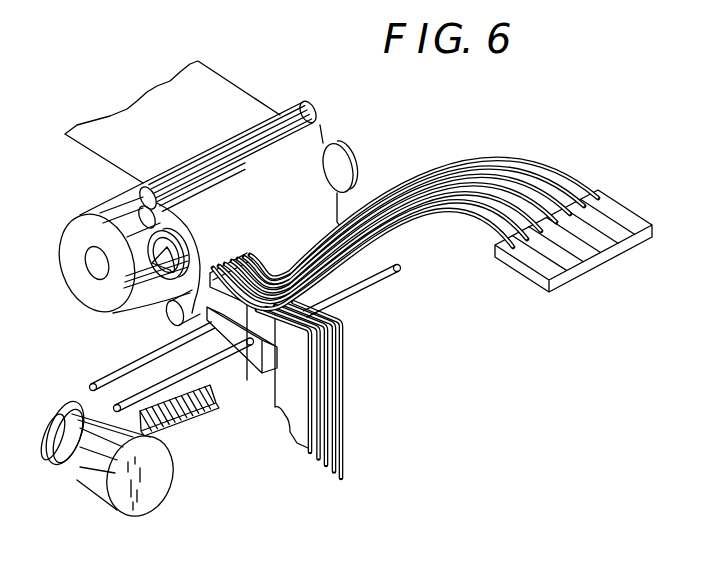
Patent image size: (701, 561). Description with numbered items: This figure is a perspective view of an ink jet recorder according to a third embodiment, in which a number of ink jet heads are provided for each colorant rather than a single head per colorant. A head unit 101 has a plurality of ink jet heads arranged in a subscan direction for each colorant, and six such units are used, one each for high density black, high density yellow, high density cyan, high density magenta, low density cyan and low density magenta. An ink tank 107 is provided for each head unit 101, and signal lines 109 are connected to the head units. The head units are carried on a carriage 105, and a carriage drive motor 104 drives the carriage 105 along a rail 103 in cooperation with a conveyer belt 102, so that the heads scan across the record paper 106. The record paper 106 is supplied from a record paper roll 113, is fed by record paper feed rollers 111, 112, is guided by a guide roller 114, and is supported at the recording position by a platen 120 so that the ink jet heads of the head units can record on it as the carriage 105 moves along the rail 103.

The head unit 101 is at (267, 270).
The conveyer belt 102 is at (187, 413).
The rail 103 is at (91, 386).
The carriage drive motor 104 is at (93, 488).
The carriage 105 is at (251, 374).
The record paper 106 is at (232, 84).
The ink tank 107 is at (530, 283).
The signal lines 109 is at (274, 414).
The record paper feed roller 111 is at (128, 214).
The record paper feed roller 112 is at (324, 110).
The record paper roll 113 is at (85, 283).
The guide roller 114 is at (170, 322).
The platen 120 is at (350, 157).